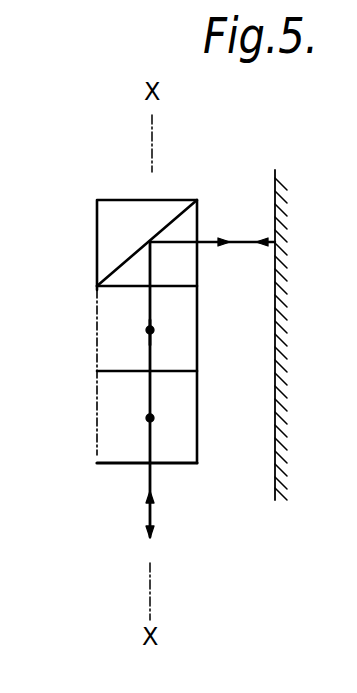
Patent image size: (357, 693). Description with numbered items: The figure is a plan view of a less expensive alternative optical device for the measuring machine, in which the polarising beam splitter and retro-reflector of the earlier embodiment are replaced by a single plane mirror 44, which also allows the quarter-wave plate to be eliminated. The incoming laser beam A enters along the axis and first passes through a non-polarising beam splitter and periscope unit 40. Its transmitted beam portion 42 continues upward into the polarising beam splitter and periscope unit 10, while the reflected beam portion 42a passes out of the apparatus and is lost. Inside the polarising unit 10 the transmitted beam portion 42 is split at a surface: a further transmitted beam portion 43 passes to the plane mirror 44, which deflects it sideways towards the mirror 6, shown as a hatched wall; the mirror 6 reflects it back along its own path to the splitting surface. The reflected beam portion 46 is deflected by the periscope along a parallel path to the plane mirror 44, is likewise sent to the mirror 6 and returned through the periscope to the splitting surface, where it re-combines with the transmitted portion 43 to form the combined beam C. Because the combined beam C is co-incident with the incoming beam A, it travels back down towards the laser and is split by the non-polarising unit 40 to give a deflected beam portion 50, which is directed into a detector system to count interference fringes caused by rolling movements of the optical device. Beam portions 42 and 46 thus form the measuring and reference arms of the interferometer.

The mirror 6 is at (272, 200).
The polarising beam splitter and periscope unit 10 is at (97, 337).
The non-polarising beam splitter and periscope unit 40 is at (97, 447).
The transmitted beam portion 42 is at (150, 395).
The reflected beam portion 42a is at (150, 418).
The further transmitted beam portion 43 is at (150, 305).
The plane mirror 44 is at (122, 264).
The reflected beam portion 46 is at (150, 330).
The deflected beam portion 50 is at (150, 513).
The incoming laser beam A is at (148, 481).
The combined beam C is at (150, 360).